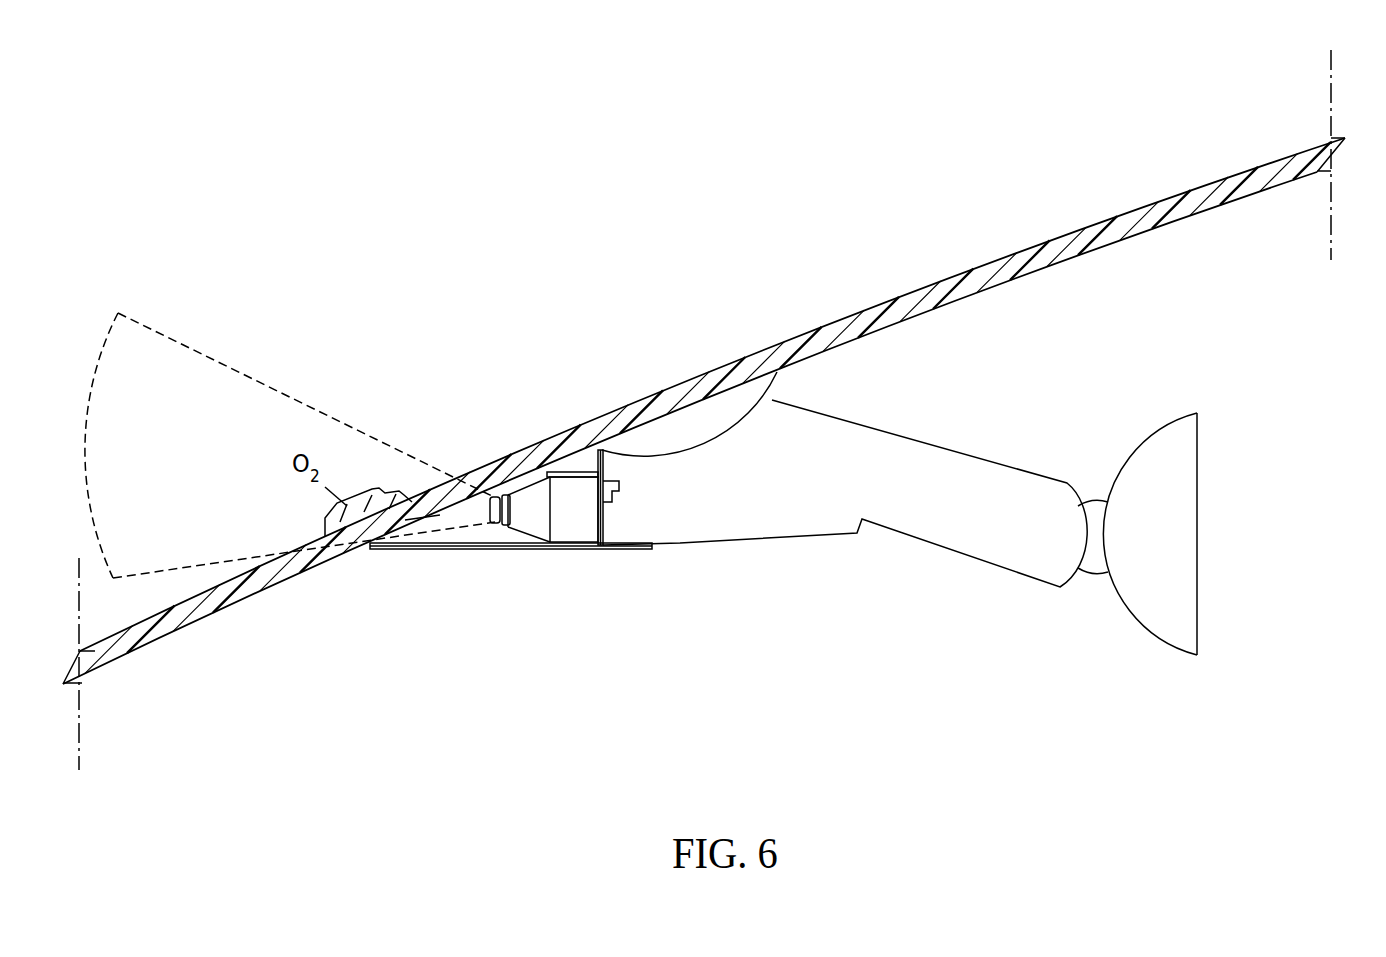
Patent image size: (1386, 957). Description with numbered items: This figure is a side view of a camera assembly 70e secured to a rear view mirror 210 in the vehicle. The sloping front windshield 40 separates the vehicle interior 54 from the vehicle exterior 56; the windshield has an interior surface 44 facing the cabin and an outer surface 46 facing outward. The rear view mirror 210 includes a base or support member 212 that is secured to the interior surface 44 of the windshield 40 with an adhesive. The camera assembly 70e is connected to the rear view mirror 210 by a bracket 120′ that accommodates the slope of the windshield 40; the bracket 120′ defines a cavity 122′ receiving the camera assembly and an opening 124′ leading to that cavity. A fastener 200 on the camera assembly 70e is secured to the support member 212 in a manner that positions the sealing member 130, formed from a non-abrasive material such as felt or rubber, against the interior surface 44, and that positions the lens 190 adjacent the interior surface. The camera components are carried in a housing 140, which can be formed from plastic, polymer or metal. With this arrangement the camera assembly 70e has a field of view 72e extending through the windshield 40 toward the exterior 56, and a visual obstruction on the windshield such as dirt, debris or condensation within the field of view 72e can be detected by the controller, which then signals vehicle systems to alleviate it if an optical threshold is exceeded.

The front windshield 40 is at (928, 296).
The interior surface 44 is at (1031, 281).
The outer surface of windshield 46 is at (1098, 222).
The interior 54 is at (939, 652).
The vehicle exterior 56 is at (499, 320).
The field of view 72e is at (214, 467).
The sealing member 130 is at (374, 550).
The aperture 124′ is at (428, 535).
The lens 122′ is at (496, 543).
The lens 190 is at (494, 495).
The bracket 120′ is at (544, 572).
The housing 140 is at (574, 494).
The camera assembly 70e is at (595, 574).
The fastener 200 is at (641, 484).
The support member 212 is at (937, 425).
The rear view mirror 210 is at (1212, 458).